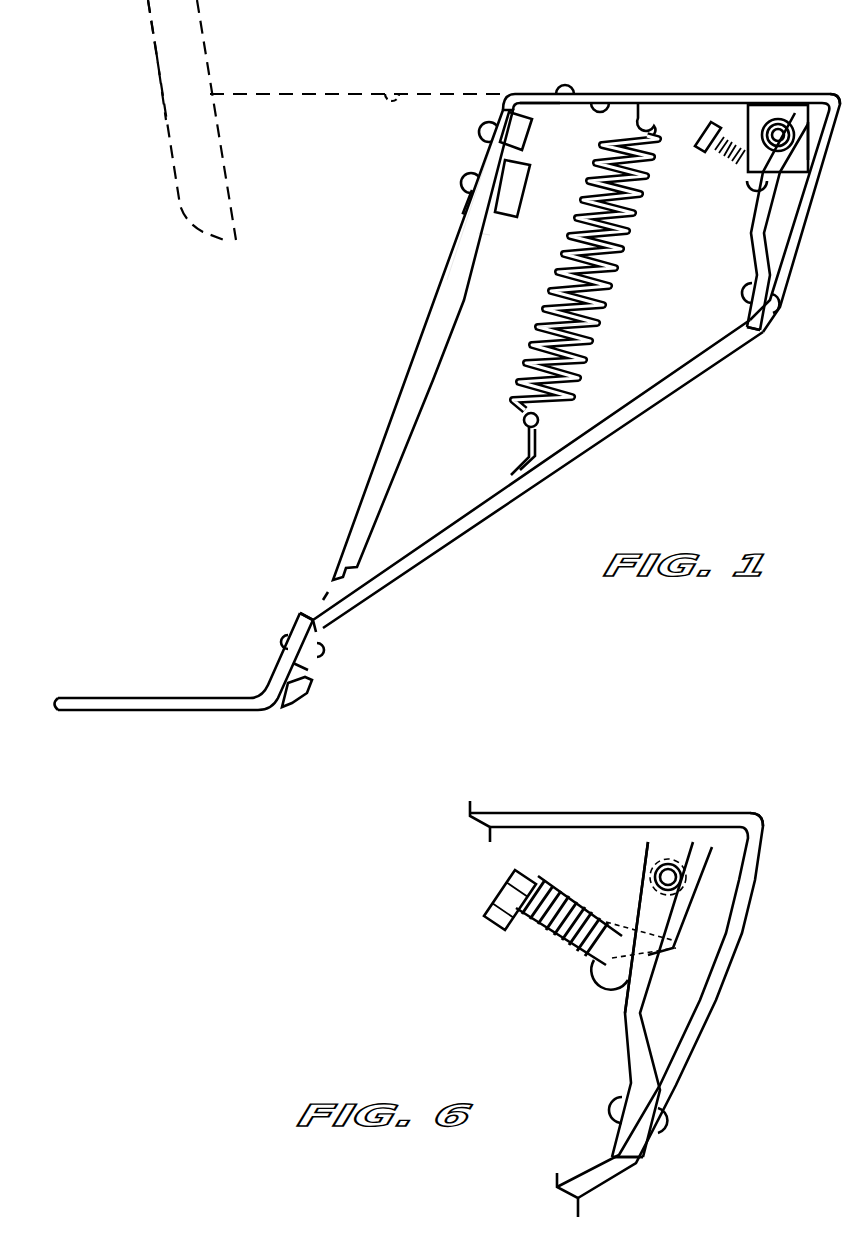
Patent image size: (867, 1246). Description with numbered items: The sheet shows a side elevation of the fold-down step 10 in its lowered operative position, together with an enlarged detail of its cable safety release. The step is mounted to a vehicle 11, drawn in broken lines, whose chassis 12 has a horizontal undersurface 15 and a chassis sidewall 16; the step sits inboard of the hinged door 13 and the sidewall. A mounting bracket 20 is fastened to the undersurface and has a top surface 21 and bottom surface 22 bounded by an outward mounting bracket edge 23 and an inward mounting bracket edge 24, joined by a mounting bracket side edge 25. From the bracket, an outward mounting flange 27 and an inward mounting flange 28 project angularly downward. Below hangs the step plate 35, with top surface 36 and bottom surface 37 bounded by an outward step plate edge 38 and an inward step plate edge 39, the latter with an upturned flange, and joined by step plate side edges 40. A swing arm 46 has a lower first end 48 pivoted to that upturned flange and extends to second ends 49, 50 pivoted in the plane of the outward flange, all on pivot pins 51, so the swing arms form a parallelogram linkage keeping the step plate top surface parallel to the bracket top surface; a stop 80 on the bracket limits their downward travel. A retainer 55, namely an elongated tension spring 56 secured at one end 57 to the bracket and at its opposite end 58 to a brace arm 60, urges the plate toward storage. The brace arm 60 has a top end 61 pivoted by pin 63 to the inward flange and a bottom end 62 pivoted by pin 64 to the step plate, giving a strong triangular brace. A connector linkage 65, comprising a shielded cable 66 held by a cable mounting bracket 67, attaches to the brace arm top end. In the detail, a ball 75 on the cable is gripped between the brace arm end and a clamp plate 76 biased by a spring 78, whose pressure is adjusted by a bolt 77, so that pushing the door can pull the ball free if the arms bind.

In FIG. 1, the fold-down step 10 is at (312, 400).
In FIG. 1, the vehicle 11 is at (170, 150).
In FIG. 1, the vehicle chassis 12 is at (372, 97).
In FIG. 1, the hinged door 13 is at (140, 2).
In FIG. 1, the horizontal undersurface 15 is at (400, 92).
In FIG. 1, the chassis sidewall 16 is at (158, 72).
In FIG. 1, the mounting bracket 20 is at (667, 93).
In FIG. 6, the mounting bracket 20 is at (547, 810).
In FIG. 1, the top surface 21 is at (565, 104).
In FIG. 1, the bottom surface 22 is at (615, 105).
In FIG. 1, the outward mounting bracket edge 23 is at (503, 93).
In FIG. 1, the inward mounting bracket edge 24 is at (844, 106).
In FIG. 6, the inward mounting bracket edge 24 is at (762, 820).
In FIG. 1, the mounting bracket side edge 25 is at (727, 100).
In FIG. 6, the mounting bracket side edge 25 is at (603, 823).
In FIG. 1, the outward mounting flange 27 is at (465, 210).
In FIG. 1, the inward mounting flange 28 is at (766, 325).
In FIG. 6, the inward mounting flange 28 is at (642, 1158).
In FIG. 1, the step plate 35 is at (150, 715).
In FIG. 1, the top surface 36 is at (203, 696).
In FIG. 1, the bottom surface 37 is at (197, 712).
In FIG. 1, the outward step plate edge 38 is at (55, 712).
In FIG. 1, the inward step plate edge 39 is at (270, 712).
In FIG. 1, the step plate side edge 40 is at (163, 707).
In FIG. 1, the swing arm 46 is at (392, 466).
In FIG. 1, the lower first end 48 is at (307, 697).
In FIG. 1, the second end 49 is at (522, 137).
In FIG. 1, the second end 50 is at (483, 233).
In FIG. 1, the pivot pins 51 is at (468, 182).
In FIG. 1, the retainer 55 is at (630, 266).
In FIG. 1, the tension spring 56 is at (598, 305).
In FIG. 1, the spring end 57 is at (656, 126).
In FIG. 1, the opposite spring end 58 is at (515, 432).
In FIG. 1, the brace arm 60 is at (580, 462).
In FIG. 1, the top end 61 is at (760, 205).
In FIG. 6, the top end 61 is at (646, 985).
In FIG. 1, the bottom end 62 is at (318, 668).
In FIG. 1, the pin 63 is at (742, 297).
In FIG. 6, the pin 63 is at (608, 1112).
In FIG. 1, the pin 64 is at (322, 655).
In FIG. 1, the connector linkage 65 is at (787, 125).
In FIG. 6, the connector linkage 65 is at (640, 870).
In FIG. 1, the shielded cable 66 is at (788, 140).
In FIG. 6, the shielded cable 66 is at (676, 879).
In FIG. 1, the cable mounting bracket 67 is at (805, 158).
In FIG. 6, the ball 75 is at (682, 855).
In FIG. 1, the clamp plate 76 is at (747, 183).
In FIG. 6, the clamp plate 76 is at (605, 982).
In FIG. 6, the bolt 77 is at (493, 927).
In FIG. 6, the spring 78 is at (570, 945).
In FIG. 1, the stop 80 is at (508, 195).